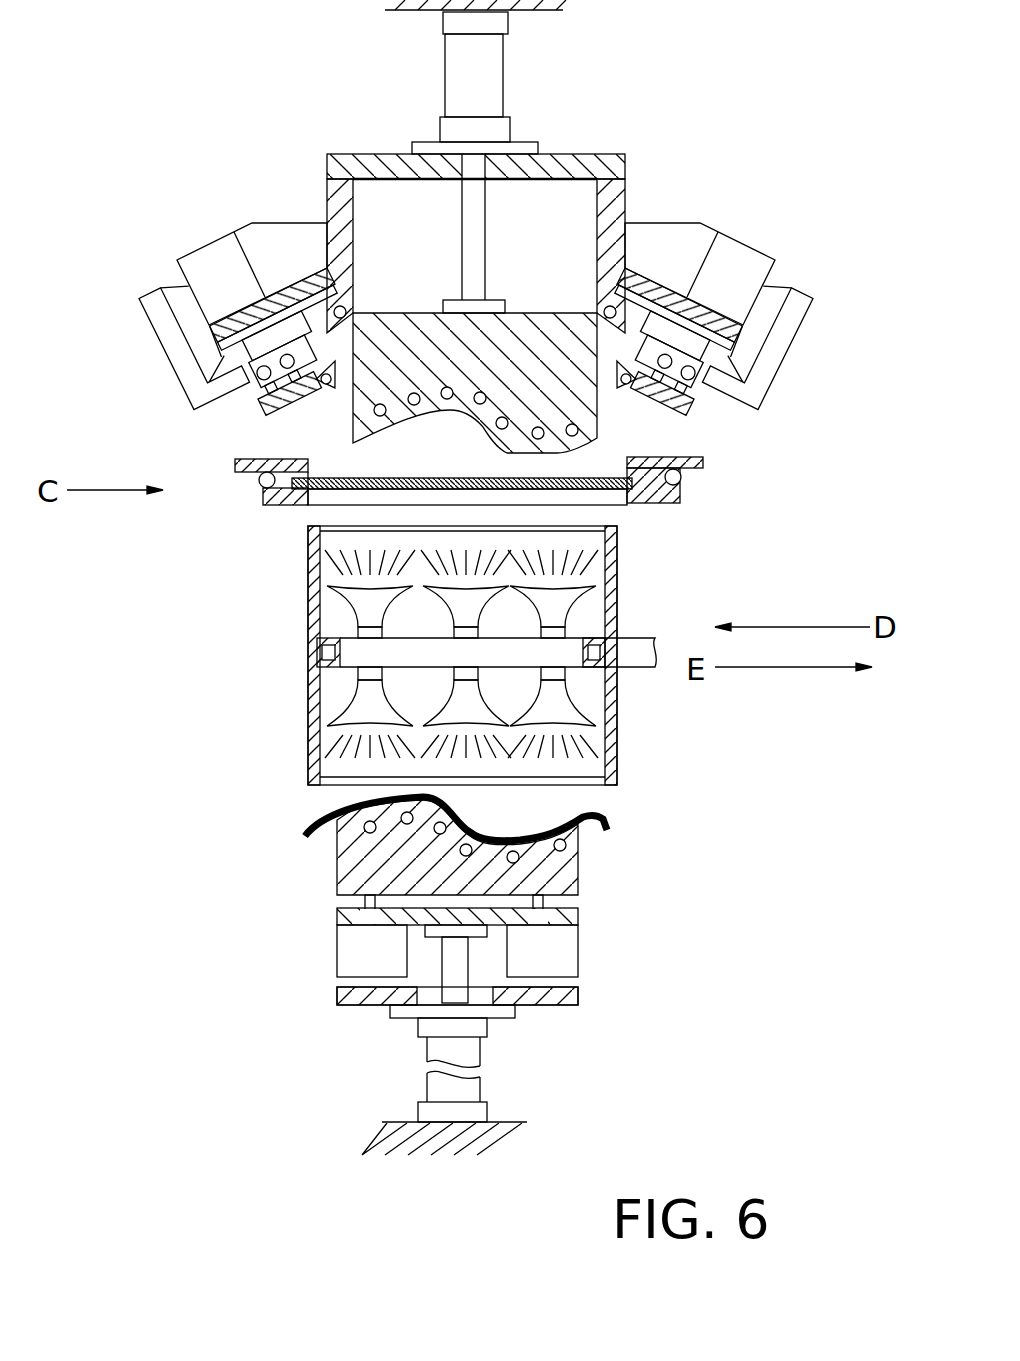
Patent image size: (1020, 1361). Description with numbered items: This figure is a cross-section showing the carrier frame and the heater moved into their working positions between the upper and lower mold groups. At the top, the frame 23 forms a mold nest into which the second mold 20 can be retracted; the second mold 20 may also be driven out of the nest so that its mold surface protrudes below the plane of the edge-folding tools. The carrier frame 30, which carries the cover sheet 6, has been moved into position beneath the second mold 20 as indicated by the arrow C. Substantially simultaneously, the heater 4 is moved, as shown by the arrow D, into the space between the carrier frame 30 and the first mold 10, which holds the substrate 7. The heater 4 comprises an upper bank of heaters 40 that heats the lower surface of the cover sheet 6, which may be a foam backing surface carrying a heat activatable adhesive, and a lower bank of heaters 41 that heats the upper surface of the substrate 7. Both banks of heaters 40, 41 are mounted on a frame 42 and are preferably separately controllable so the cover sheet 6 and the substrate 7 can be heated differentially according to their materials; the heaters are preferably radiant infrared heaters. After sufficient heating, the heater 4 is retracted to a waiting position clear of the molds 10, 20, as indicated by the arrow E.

The frame 23 is at (617, 202).
The second mold 20 is at (597, 415).
The cover sheet 6 is at (313, 503).
The carrier frame 30 is at (680, 500).
The frame 42 is at (307, 688).
The heater 4 is at (250, 655).
The upper bank of heaters 40 is at (597, 586).
The lower bank of heaters 41 is at (578, 722).
The substrate 7 is at (608, 820).
The first mold 10 is at (580, 858).